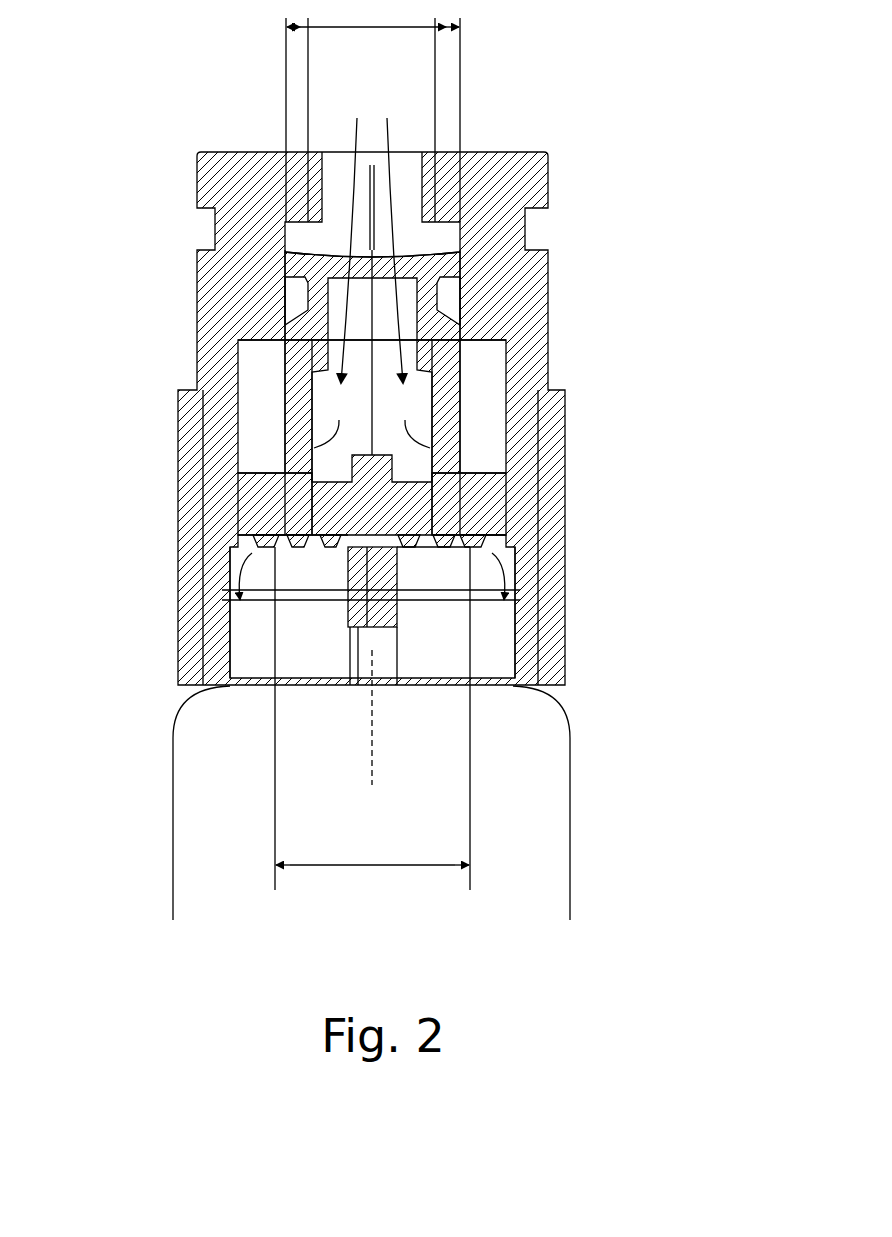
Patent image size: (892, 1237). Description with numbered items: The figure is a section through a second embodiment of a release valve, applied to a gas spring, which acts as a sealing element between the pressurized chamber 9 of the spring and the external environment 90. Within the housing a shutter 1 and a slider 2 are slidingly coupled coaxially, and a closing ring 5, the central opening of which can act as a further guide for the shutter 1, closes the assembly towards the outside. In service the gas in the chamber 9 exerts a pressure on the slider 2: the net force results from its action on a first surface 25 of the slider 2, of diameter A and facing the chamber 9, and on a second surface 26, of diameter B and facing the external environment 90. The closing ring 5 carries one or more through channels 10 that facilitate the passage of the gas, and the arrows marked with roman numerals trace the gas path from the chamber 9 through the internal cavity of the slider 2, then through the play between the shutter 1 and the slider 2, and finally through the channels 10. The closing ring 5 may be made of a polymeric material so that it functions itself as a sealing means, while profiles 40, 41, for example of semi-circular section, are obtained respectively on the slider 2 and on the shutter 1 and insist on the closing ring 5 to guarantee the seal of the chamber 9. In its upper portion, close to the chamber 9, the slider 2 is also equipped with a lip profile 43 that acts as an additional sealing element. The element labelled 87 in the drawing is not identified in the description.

The chamber 9 is at (368, 65).
The first surface 25 is at (318, 243).
The lip profile 43 is at (292, 262).
The slider 2 is at (262, 497).
The closing ring 5 is at (480, 558).
The shutter 1 is at (355, 560).
The profile 41 is at (331, 552).
The profile 40 is at (278, 556).
The second surface 26 is at (443, 565).
The vent channel 87 is at (256, 623).
The through channels 10 is at (259, 640).
The external environment 90 is at (362, 817).